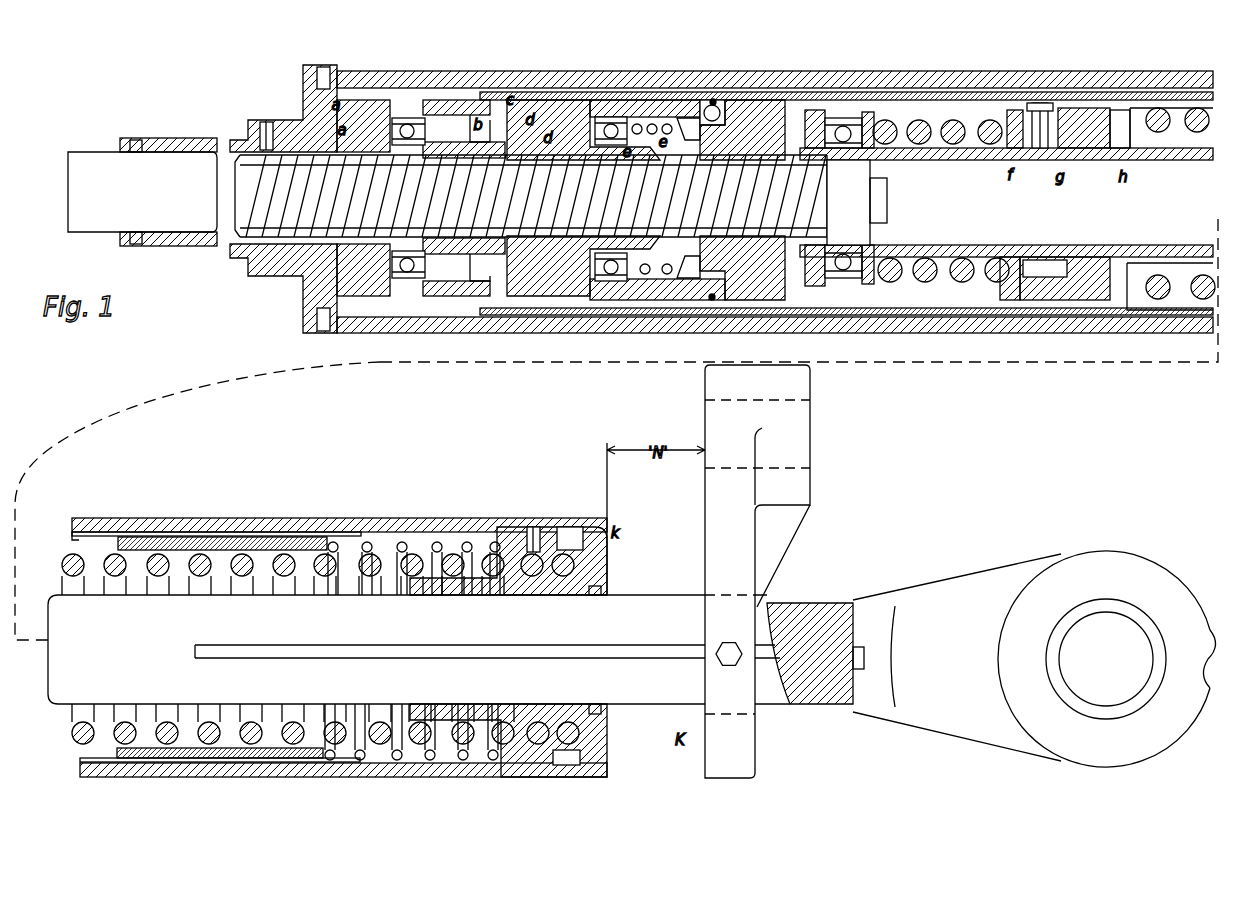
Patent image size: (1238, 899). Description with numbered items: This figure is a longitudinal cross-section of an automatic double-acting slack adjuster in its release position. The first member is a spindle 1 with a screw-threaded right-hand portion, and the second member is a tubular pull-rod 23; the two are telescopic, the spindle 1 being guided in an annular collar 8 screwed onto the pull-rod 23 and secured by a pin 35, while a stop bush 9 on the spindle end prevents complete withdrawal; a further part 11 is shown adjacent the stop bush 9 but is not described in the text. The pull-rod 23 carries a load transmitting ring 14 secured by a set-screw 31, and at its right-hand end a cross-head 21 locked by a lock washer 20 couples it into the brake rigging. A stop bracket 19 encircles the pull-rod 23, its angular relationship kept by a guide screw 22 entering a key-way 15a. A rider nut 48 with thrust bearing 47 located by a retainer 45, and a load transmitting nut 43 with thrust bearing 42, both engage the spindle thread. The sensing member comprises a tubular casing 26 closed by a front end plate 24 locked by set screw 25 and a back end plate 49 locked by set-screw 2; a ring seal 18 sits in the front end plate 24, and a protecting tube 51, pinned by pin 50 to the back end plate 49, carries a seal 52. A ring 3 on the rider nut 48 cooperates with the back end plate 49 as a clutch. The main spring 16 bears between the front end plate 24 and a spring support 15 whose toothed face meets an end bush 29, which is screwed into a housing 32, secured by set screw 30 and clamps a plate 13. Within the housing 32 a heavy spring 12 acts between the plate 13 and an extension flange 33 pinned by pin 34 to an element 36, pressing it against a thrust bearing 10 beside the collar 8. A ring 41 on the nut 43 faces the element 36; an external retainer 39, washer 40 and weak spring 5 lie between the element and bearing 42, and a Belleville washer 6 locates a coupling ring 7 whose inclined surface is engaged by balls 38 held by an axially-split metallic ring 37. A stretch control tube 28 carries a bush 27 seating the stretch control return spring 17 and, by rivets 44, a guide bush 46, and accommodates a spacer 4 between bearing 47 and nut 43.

The spindle 1 is at (170, 217).
The set-screw 2 is at (322, 331).
The ring 3 is at (345, 296).
The spacer 4 is at (487, 289).
The weak spring 5 is at (612, 281).
The Belleville washer 6 is at (660, 275).
The coupling ring 7 is at (710, 300).
The annular collar 8 is at (762, 300).
The stop bush 9 is at (838, 245).
The thrust bearing 10 is at (845, 278).
The collar key 11 is at (878, 223).
The heavy spring 12 is at (965, 257).
The plate 13 is at (1010, 300).
The load transmitting ring 14 is at (1040, 300).
The spring support 15 is at (1133, 310).
The key-way 15a is at (262, 660).
The main spring 16 is at (375, 745).
The stretch control return spring 17 is at (430, 760).
The ring seal 18 is at (602, 712).
The stop bracket 19 is at (725, 778).
The lock washer 20 is at (848, 706).
The cross-head 21 is at (975, 730).
The guide screw 22 is at (736, 645).
The tubular pull-rod 23 is at (640, 627).
The front end plate 24 is at (598, 527).
The set screw 25 is at (533, 527).
The tubular casing 26 is at (410, 520).
The bush 27 is at (323, 540).
The stretch control tube 28 is at (98, 534).
The end bush 29 is at (1085, 108).
The set screw 30 is at (1040, 103).
The set-screw 31 is at (1012, 110).
The housing 32 is at (953, 120).
The extension flange 33 is at (870, 112).
The pin 34 is at (845, 118).
The pin 35 is at (813, 110).
The element 36 is at (758, 110).
The axially-split metallic ring 37 is at (690, 101).
The balls 38 is at (714, 101).
The external retainer 39 is at (688, 118).
The washer 40 is at (655, 124).
The ring 41 is at (637, 124).
The thrust bearing 42 is at (608, 117).
The load transmitting nut 43 is at (560, 125).
The rivets 44 is at (478, 100).
The retainer 45 is at (428, 142).
The guide bush 46 is at (440, 78).
The thrust bearing 47 is at (405, 118).
The rider nut 48 is at (362, 118).
The back end plate 49 is at (300, 120).
The pin 50 is at (264, 122).
The protecting tube 51 is at (180, 140).
The seal 52 is at (138, 141).